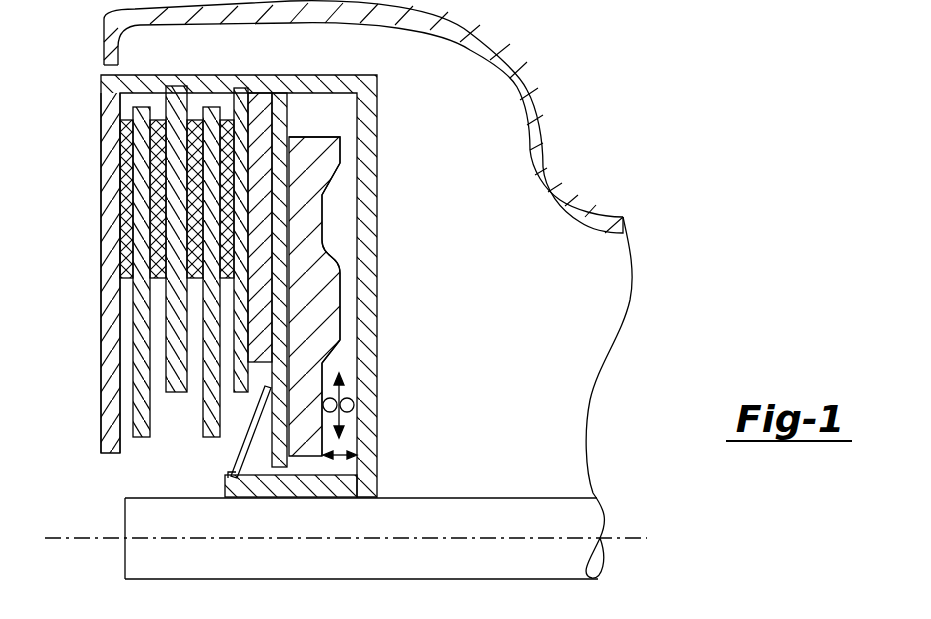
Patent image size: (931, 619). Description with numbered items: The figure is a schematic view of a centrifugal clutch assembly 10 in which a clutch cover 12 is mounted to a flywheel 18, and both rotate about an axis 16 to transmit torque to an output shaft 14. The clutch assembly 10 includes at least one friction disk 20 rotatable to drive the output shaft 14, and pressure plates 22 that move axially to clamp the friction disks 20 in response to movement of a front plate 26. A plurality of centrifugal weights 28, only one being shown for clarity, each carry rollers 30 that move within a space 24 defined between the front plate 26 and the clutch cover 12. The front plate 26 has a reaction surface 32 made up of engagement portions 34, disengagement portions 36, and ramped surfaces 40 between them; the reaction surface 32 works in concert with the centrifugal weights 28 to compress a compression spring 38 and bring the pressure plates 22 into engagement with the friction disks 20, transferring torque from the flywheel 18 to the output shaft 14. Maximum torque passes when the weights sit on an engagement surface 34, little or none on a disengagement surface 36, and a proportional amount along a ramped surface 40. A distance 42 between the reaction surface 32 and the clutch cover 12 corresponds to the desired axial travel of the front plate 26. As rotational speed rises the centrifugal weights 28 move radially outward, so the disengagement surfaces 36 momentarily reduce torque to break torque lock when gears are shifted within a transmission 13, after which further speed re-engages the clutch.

The centrifugal clutch assembly 10 is at (493, 110).
The clutch cover 12 is at (377, 146).
The transmission 13 is at (604, 280).
The output shaft 14 is at (547, 498).
The axis 16 is at (74, 535).
The flywheel 18 is at (102, 118).
The friction disk 20 is at (152, 398).
The pressure plates 22 is at (241, 88).
The space 24 is at (348, 302).
The front plate 26 is at (330, 145).
The centrifugal weights 28 is at (350, 421).
The rollers 30 is at (352, 405).
The reaction surface 32 is at (335, 367).
The engagement portions 34 is at (340, 273).
The disengagement portions 36 is at (323, 200).
The compression spring 38 is at (238, 452).
The ramped surfaces 40 is at (330, 257).
The distance 42 is at (340, 458).